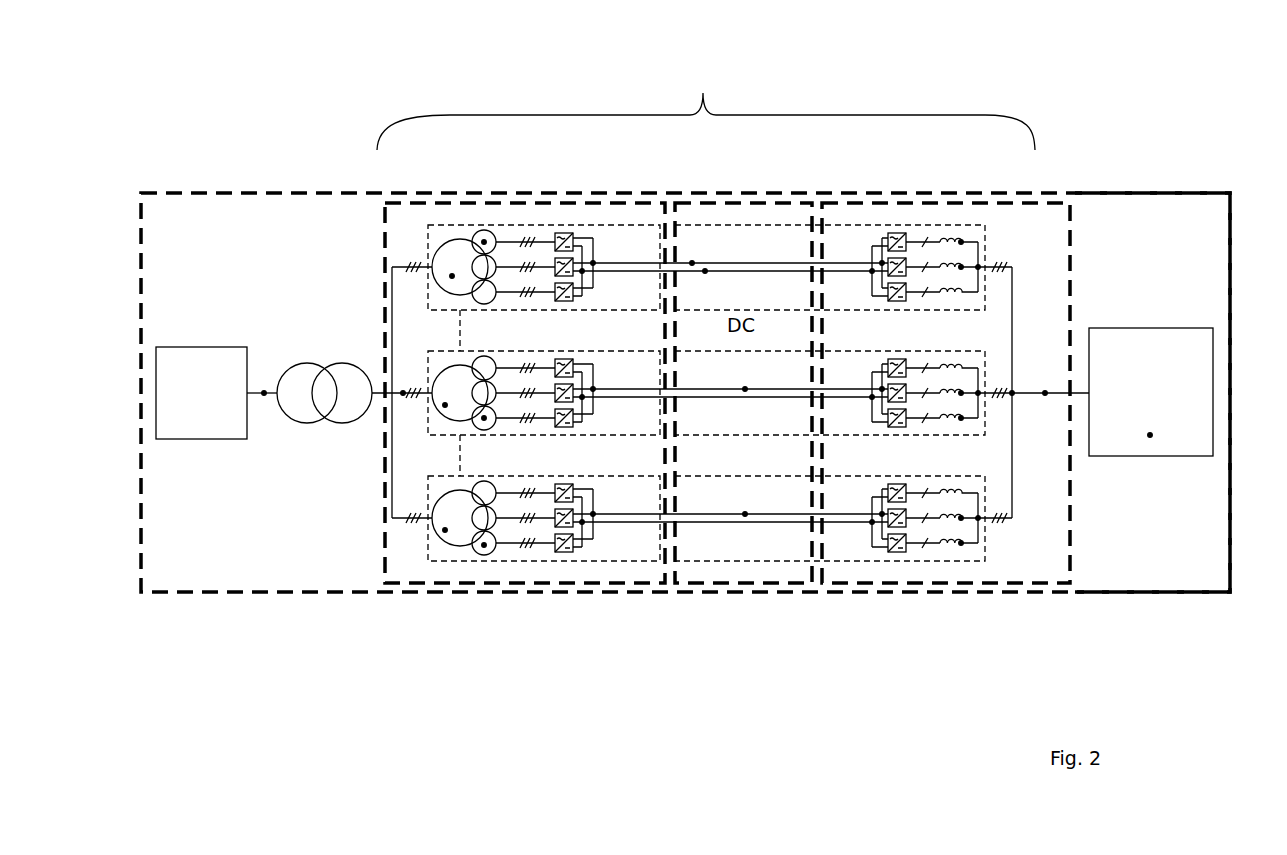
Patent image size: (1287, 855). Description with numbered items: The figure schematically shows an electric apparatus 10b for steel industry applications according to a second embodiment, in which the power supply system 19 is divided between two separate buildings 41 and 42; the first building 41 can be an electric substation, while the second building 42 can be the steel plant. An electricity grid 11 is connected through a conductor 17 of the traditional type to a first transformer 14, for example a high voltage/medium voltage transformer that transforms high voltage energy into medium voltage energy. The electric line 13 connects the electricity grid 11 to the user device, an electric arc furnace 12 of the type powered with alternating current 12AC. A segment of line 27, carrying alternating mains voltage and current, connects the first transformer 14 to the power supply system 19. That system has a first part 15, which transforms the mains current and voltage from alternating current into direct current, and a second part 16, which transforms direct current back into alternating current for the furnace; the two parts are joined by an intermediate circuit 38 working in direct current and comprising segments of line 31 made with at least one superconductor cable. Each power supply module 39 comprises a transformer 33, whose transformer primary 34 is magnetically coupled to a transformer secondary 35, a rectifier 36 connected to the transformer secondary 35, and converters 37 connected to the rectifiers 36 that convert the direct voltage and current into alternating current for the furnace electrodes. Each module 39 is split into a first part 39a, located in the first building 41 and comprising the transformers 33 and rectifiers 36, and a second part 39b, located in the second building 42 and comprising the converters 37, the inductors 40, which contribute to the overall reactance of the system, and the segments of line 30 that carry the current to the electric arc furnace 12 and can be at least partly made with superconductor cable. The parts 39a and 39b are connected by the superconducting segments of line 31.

The electric apparatus 10b is at (266, 106).
The electricity grid 11 is at (183, 424).
The electric arc furnace 12 is at (1126, 324).
The alternating current electric arc furnace 12AC is at (1150, 437).
The electric line 13 is at (377, 366).
The first transformer 14 is at (320, 430).
The first part 15 is at (380, 214).
The second part 16 is at (1078, 250).
The conductor 17 is at (264, 391).
The power supply system 19 is at (706, 108).
The segment of line 27 is at (402, 395).
The segments of line 30 is at (1045, 396).
The segments of line 31 is at (705, 269).
The transformer 33 is at (447, 248).
The transformer primary 34 is at (452, 277).
The transformer secondary 35 is at (484, 241).
The rectifier 36 is at (565, 240).
The converters 37 is at (893, 260).
The intermediate circuit 38 is at (743, 258).
The power supply module 39 is at (780, 219).
The first part of power supply module 39a is at (520, 225).
The second part of power supply module 39b is at (940, 226).
The inductor 40 is at (962, 266).
The first building 41 is at (140, 222).
The second building 42 is at (1232, 224).